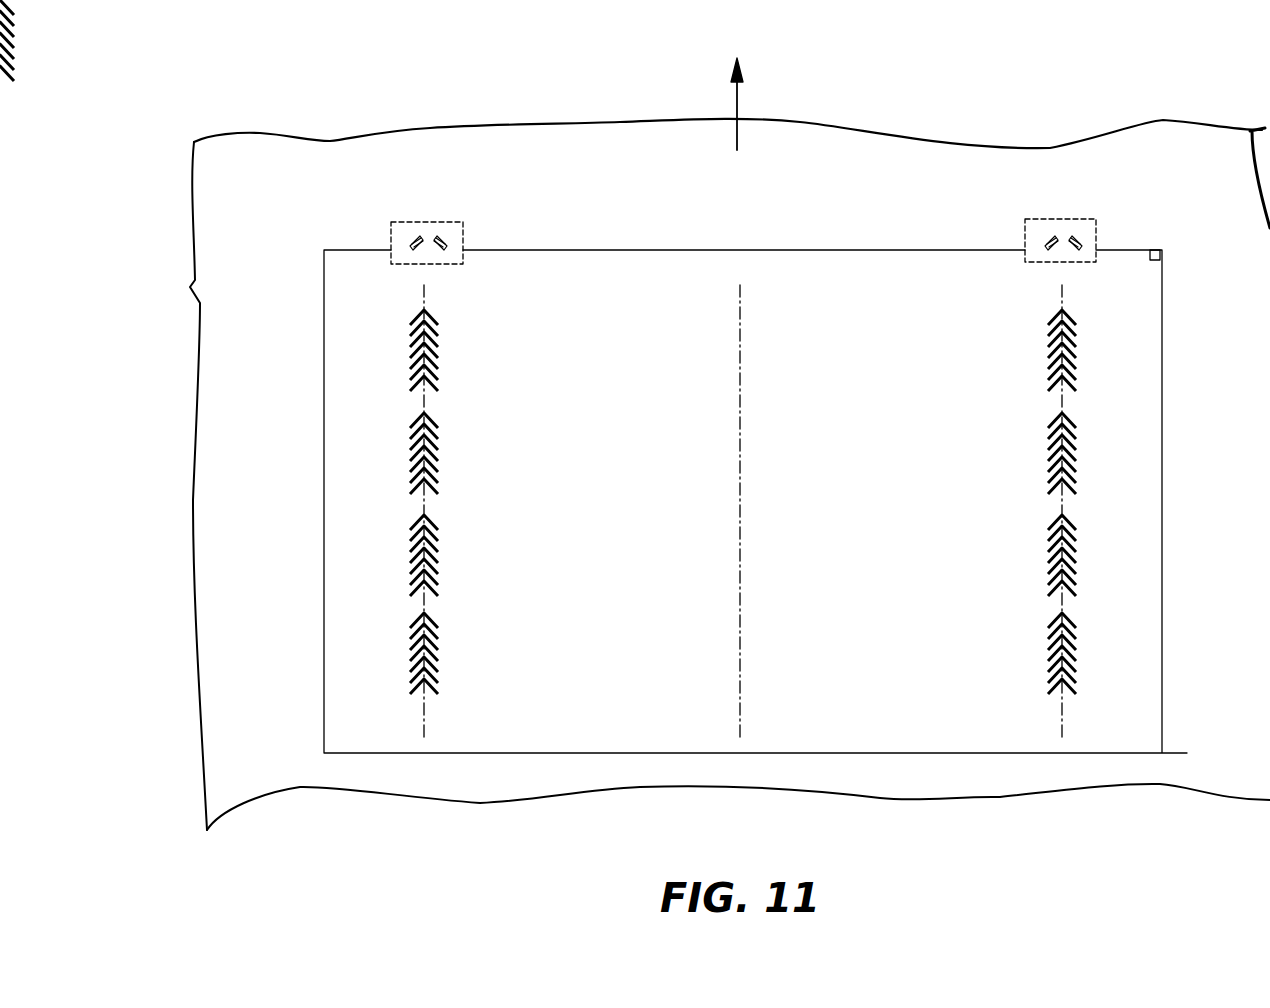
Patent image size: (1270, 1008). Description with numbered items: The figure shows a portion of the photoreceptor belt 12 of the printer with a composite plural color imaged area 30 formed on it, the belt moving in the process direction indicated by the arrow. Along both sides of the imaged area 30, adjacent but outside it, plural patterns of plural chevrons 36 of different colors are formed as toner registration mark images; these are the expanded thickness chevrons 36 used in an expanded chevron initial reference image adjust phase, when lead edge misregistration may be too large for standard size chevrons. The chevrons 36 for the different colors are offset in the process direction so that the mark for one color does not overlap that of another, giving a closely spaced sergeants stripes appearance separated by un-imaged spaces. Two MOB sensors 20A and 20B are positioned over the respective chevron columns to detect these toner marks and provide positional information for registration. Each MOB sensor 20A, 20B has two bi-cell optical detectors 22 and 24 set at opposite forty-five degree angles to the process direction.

The photoreceptor belt 12 is at (610, 135).
The MOB sensor 20A is at (463, 263).
The MOB sensor 20B is at (1098, 237).
The bi-cell optical detector 22 is at (412, 243).
The bi-cell optical detector 24 is at (447, 243).
The composite plural color imaged area 30 is at (623, 672).
The expanded chevron 36 is at (440, 377).